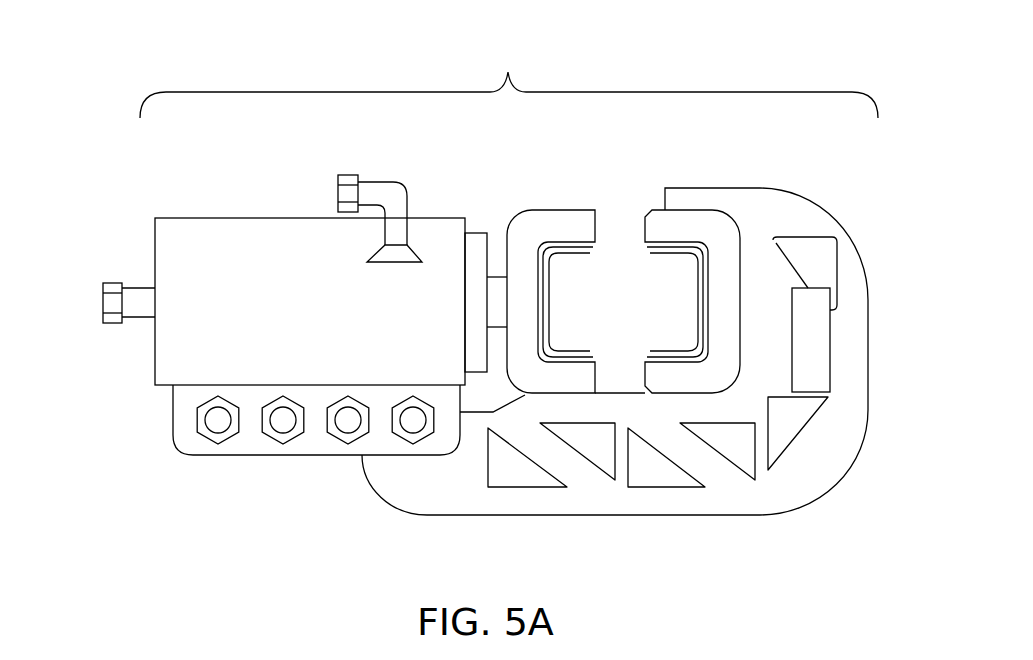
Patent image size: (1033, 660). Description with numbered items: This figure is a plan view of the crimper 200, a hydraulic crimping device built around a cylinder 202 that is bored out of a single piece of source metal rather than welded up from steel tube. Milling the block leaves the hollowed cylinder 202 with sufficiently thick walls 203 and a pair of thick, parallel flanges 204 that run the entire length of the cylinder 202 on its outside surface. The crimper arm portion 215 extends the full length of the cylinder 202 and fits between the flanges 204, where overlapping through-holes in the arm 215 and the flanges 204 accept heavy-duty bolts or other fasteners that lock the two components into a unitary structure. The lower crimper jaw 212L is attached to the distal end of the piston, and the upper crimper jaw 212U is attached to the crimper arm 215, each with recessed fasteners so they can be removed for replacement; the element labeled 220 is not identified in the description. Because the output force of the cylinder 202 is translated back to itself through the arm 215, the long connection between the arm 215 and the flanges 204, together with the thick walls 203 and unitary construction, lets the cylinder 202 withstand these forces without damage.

The crimper 200 is at (508, 70).
The cylinder 202 is at (129, 187).
The walls 203 is at (247, 250).
The flanges 204 is at (320, 438).
The lower crimper jaw 212L is at (560, 225).
The upper crimper jaw 212U is at (662, 225).
The crimper arm portion 215 is at (782, 482).
The latch block 220 is at (810, 355).